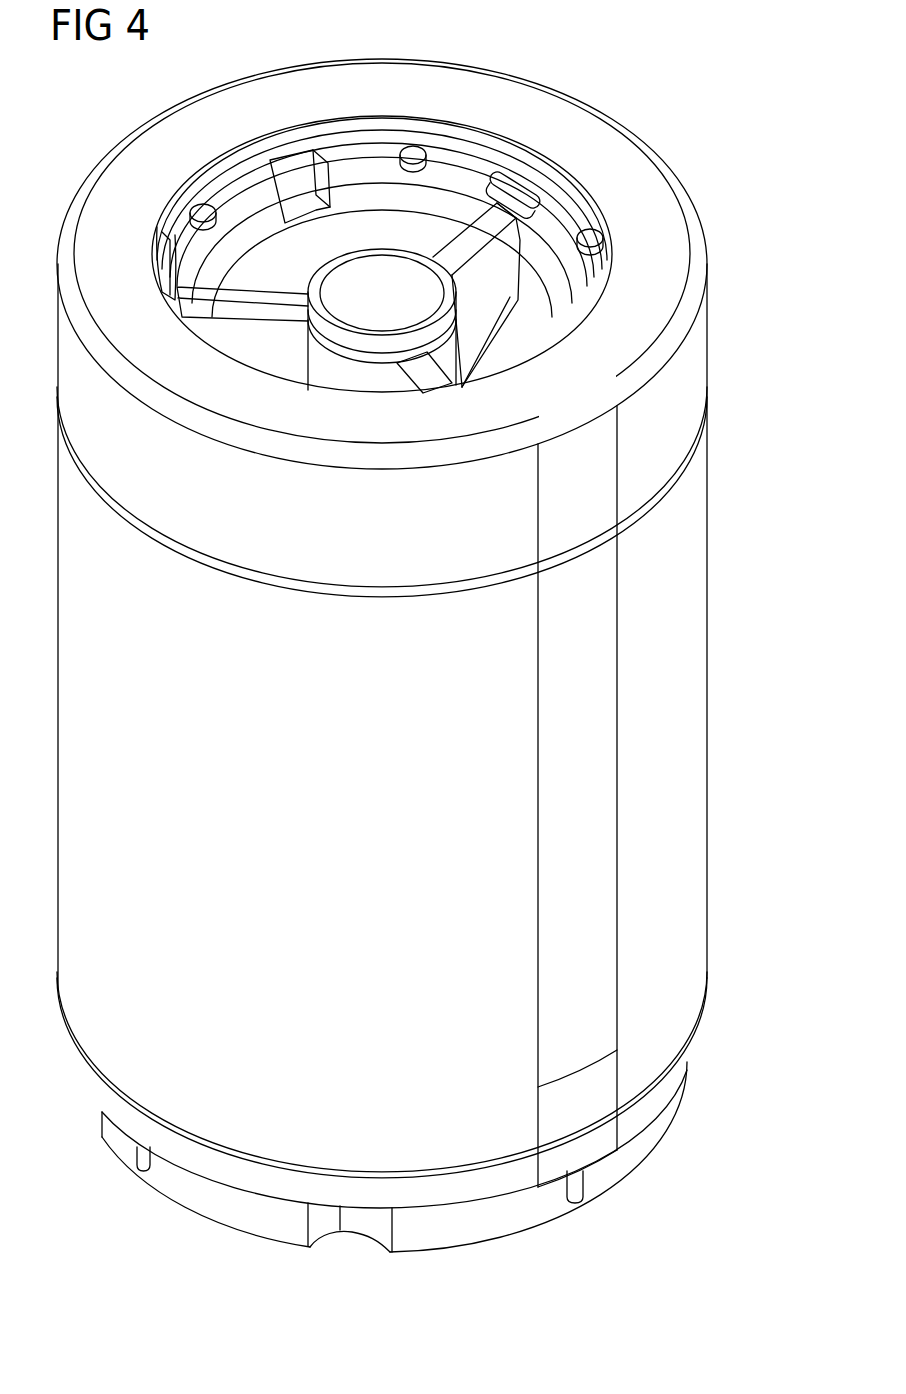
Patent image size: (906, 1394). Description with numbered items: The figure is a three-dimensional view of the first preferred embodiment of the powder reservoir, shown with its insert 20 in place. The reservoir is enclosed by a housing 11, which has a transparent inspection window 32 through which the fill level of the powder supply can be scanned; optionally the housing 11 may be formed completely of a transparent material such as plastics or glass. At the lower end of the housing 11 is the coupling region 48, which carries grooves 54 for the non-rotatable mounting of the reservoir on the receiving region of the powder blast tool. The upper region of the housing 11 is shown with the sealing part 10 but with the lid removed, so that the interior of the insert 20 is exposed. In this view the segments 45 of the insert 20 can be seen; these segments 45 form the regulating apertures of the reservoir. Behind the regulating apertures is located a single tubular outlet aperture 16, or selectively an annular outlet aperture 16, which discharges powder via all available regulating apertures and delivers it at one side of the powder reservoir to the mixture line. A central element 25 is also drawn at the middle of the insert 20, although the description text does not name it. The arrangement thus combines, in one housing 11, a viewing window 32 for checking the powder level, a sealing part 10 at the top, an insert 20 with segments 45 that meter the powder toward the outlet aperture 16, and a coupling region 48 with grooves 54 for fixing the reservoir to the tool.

The sealing part 10 is at (697, 353).
The housing 11 is at (697, 652).
The outlet aperture 16 is at (302, 168).
The insert 20 is at (497, 293).
The central hub 25 is at (342, 283).
The transparent inspection window 32 is at (608, 826).
The segments 45 is at (183, 253).
The coupling region 48 is at (630, 1160).
The grooves 54 is at (355, 1238).